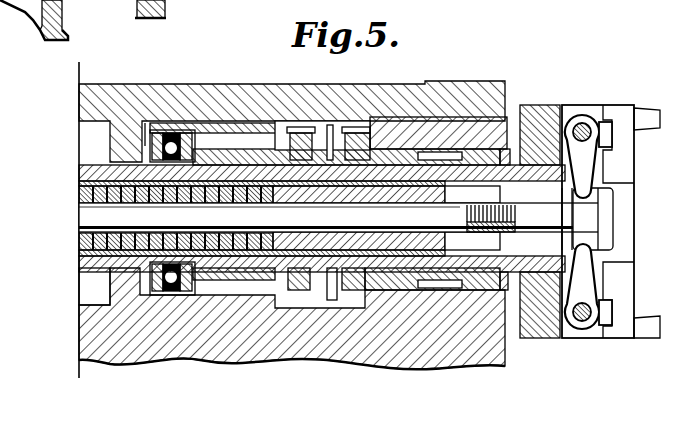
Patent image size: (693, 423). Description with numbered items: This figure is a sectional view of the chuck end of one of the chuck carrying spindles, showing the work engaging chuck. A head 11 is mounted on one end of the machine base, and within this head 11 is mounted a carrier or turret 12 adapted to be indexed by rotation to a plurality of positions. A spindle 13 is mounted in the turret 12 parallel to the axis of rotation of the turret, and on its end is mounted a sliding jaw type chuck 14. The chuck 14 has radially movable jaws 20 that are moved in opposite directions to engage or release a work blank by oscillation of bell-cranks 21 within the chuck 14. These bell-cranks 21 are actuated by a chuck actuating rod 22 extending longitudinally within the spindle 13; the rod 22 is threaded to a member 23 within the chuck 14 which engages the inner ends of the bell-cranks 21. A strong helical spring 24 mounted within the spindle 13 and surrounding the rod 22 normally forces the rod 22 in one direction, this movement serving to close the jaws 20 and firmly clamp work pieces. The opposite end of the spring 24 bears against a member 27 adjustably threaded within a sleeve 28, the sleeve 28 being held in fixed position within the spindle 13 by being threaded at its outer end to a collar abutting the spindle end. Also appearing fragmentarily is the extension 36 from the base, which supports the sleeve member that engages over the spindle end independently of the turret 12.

The head 11 is at (205, 87).
The carrier or turret 12 is at (221, 360).
The spindle 13 is at (77, 268).
The chuck 14 is at (539, 112).
The jaws 20 is at (628, 146).
The bell-cranks 21 is at (590, 159).
The chuck actuating rod 22 is at (336, 217).
The member 23 is at (600, 218).
The helical spring 24 is at (79, 187).
The member 27 is at (337, 140).
The sleeve 28 is at (79, 245).
The extension 36 is at (41, 33).